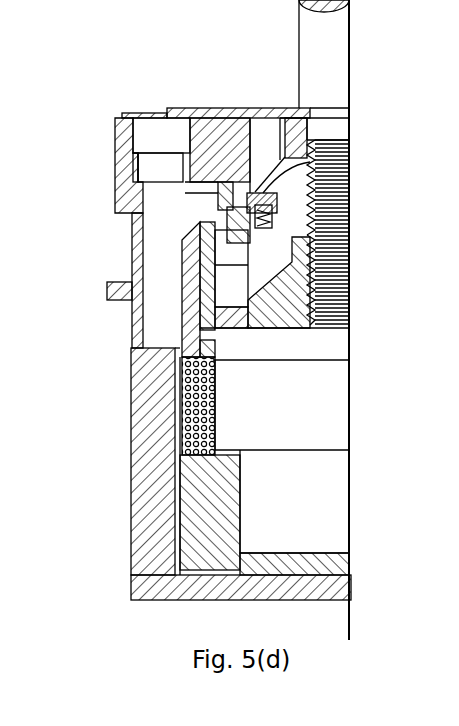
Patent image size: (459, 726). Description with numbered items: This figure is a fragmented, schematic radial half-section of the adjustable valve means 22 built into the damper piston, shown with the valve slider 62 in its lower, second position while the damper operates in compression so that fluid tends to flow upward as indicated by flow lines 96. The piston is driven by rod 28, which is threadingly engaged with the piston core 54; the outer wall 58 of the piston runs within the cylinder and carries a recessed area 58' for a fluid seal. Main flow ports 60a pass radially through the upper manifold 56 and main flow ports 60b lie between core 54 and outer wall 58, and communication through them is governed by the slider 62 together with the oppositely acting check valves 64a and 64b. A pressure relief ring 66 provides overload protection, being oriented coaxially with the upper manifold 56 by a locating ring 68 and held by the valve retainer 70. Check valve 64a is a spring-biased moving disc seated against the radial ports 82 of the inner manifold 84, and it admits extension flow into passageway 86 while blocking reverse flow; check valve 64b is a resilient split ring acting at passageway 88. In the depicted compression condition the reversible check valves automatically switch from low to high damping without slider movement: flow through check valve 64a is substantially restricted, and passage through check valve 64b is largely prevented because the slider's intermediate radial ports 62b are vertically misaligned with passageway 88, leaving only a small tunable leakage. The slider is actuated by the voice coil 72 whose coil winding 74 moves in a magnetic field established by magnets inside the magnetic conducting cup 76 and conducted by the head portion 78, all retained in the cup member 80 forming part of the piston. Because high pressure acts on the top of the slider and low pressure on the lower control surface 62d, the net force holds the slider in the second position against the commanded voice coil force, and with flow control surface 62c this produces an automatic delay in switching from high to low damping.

The adjustable valve means 22 is at (122, 508).
The rod 28 is at (336, 30).
The piston core 54 is at (323, 340).
The upper manifold 56 is at (115, 127).
The outer wall 58 is at (86, 292).
The recessed area 58' is at (106, 280).
The main flow port 60a is at (258, 192).
The main flow port 60b is at (165, 332).
The valve slider 62 is at (182, 240).
The radial ports 62b is at (178, 280).
The flow control surface 62c is at (135, 165).
The lower control surface 62d is at (148, 377).
The check valve 64a is at (343, 165).
The check valve 64b is at (349, 311).
The pressure relief ring 66 is at (140, 112).
The locating ring 68 is at (213, 107).
The valve retainer 70 is at (240, 107).
The voice coil 72 is at (213, 367).
The coil winding 74 is at (183, 428).
The magnetic conducting cup 76 is at (294, 512).
The head portion 78 is at (282, 405).
The cup member 80 is at (131, 462).
The radial ports 82 is at (340, 143).
The inner manifold 84 is at (330, 262).
The passageway 86 is at (343, 238).
The passageway 88 is at (346, 277).
The flow lines 96 is at (110, 355).